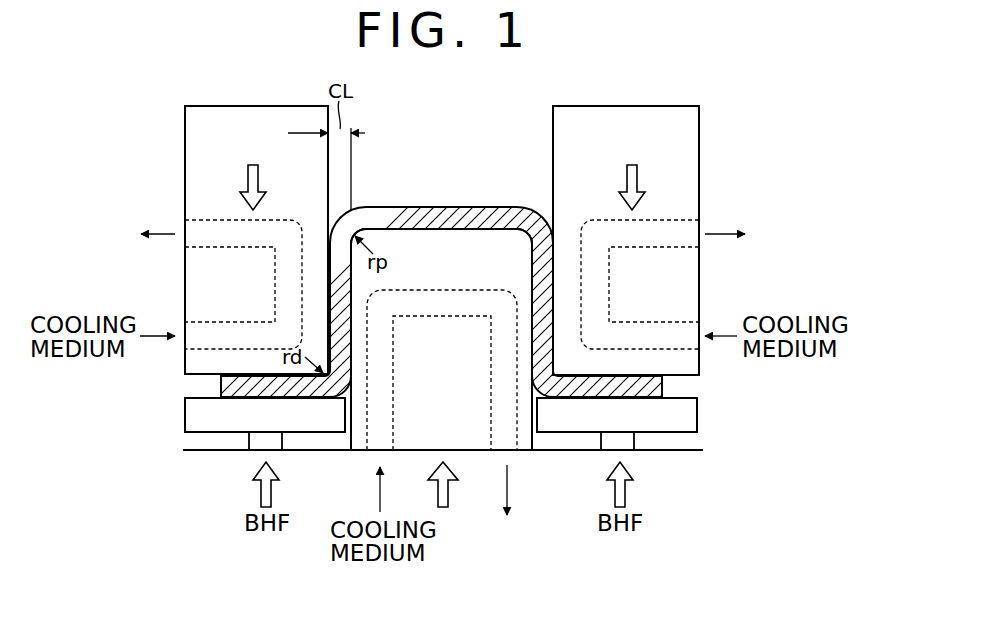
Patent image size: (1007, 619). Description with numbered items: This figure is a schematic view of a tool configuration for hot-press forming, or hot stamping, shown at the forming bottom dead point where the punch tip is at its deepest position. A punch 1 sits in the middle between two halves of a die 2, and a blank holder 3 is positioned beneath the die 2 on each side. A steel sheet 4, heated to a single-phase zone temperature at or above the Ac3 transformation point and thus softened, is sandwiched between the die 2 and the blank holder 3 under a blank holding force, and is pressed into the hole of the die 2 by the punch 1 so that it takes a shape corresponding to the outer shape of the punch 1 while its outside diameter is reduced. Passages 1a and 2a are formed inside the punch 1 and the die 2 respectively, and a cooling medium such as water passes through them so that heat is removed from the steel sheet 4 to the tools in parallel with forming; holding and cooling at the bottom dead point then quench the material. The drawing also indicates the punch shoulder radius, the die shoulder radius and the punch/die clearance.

The punch 1 is at (470, 440).
The passage 1a is at (366, 432).
The die 2 is at (260, 118).
The passage 2a is at (215, 223).
The blank holder 3 is at (210, 428).
The steel sheet 4 is at (443, 207).